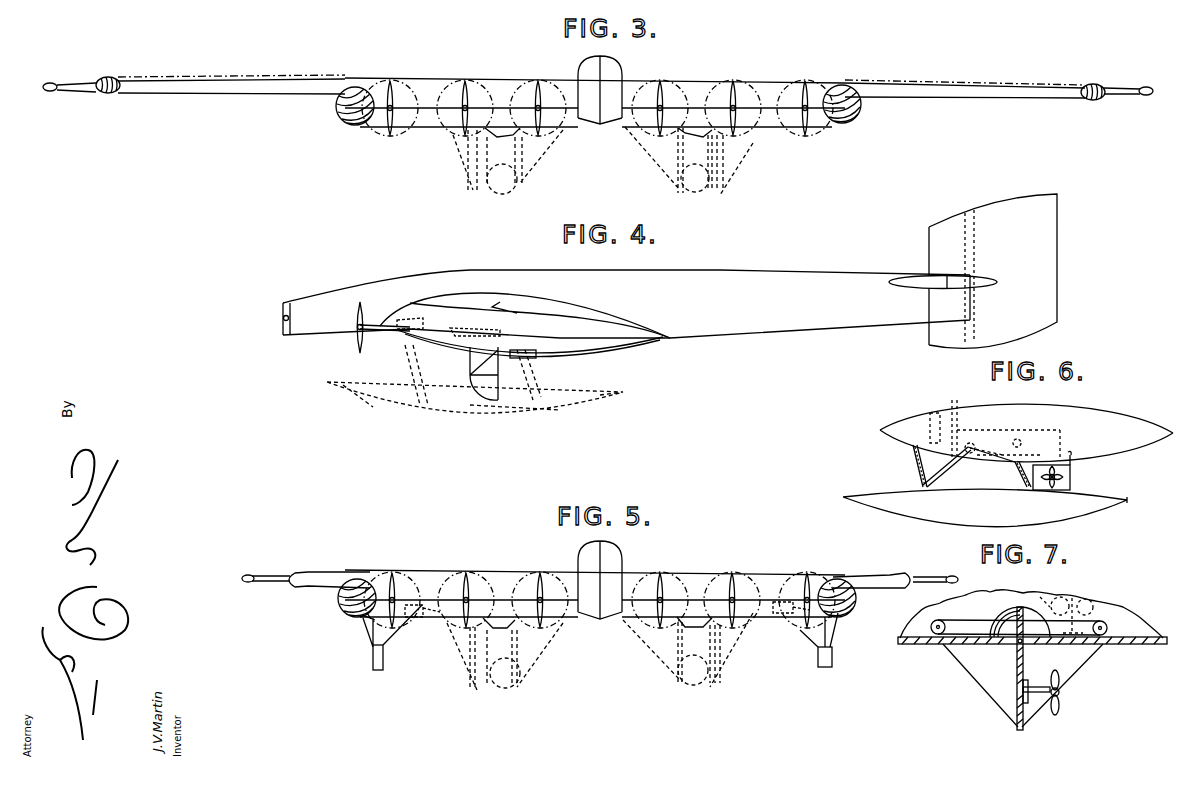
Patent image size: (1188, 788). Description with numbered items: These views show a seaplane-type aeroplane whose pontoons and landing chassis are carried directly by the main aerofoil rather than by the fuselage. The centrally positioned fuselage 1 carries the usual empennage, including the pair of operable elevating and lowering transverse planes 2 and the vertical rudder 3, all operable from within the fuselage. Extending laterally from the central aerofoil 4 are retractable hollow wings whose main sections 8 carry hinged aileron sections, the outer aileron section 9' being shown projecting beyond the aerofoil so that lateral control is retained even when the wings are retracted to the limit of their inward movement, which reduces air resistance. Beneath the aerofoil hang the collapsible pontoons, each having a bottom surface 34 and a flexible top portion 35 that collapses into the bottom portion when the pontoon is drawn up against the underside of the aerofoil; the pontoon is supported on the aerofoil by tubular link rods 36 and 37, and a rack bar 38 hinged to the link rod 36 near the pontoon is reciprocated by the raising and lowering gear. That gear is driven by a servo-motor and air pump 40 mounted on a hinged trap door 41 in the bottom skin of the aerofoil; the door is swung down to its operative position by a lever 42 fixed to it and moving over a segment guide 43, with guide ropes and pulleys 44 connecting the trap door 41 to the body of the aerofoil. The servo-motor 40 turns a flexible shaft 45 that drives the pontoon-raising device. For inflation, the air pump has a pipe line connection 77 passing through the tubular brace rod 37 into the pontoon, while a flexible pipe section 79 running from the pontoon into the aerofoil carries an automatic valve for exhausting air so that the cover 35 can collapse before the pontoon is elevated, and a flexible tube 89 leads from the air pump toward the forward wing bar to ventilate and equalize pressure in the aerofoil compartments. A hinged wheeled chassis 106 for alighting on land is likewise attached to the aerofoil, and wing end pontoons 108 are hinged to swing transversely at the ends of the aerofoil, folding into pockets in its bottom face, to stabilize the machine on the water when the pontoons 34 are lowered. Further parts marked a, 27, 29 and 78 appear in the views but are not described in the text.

In FIG. 3, the fuselage 1 is at (587, 68).
In FIG. 4, the fuselage 1 is at (626, 304).
In FIG. 5, the fuselage 1 is at (613, 563).
In FIG. 4, the transverse planes 2 is at (933, 332).
In FIG. 4, the vertical rudder 3 is at (993, 271).
In FIG. 4, the wing section 4 is at (525, 325).
In FIG. 5, the wing section 4 is at (415, 571).
In FIG. 3, the main wing section 8 is at (237, 77).
In FIG. 4, the main wing section 8 is at (470, 301).
In FIG. 5, the main wing section 8 is at (330, 572).
In FIG. 3, the outer aileron section 9' is at (598, 74).
In FIG. 5, the outer aileron section 9' is at (600, 565).
In FIG. 3, the nacelle a is at (341, 118).
In FIG. 5, the nacelle a is at (343, 603).
In FIG. 4, the nose strut 27 is at (367, 325).
In FIG. 3, the propeller 29 is at (393, 134).
In FIG. 4, the propeller 29 is at (357, 322).
In FIG. 5, the propeller 29 is at (526, 576).
In FIG. 3, the pontoon bottom surface 34 is at (700, 140).
In FIG. 4, the pontoon bottom surface 34 is at (618, 350).
In FIG. 5, the pontoon bottom surface 34 is at (655, 650).
In FIG. 6, the pontoon bottom surface 34 is at (890, 519).
In FIG. 4, the flexible top portion 35 is at (335, 363).
In FIG. 6, the flexible top portion 35 is at (913, 487).
In FIG. 4, the tubular link rod 36 is at (415, 385).
In FIG. 6, the tubular link rod 36 is at (913, 456).
In FIG. 4, the tubular link rod 37 is at (515, 378).
In FIG. 6, the tubular link rod 37 is at (1021, 483).
In FIG. 6, the rack bar 38 is at (940, 463).
In FIG. 6, the servo-motor and air pump 40 is at (1054, 485).
In FIG. 7, the servo-motor and air pump 40 is at (1052, 703).
In FIG. 6, the hinged trap door 41 is at (1040, 490).
In FIG. 7, the hinged trap door 41 is at (1016, 668).
In FIG. 7, the lever 42 is at (1017, 610).
In FIG. 7, the segment guide 43 is at (1000, 617).
In FIG. 7, the guide ropes and pulleys 44 is at (1107, 629).
In FIG. 6, the flexible shaft 45 is at (996, 455).
In FIG. 6, the pipe line connection 77 is at (1043, 457).
In FIG. 6, the air conduit 78 is at (937, 413).
In FIG. 6, the flexible pipe section 79 is at (1017, 447).
In FIG. 6, the flexible tube 89 is at (970, 410).
In FIG. 3, the wheeled chassis 106 is at (473, 190).
In FIG. 5, the wheeled chassis 106 is at (720, 687).
In FIG. 4, the wing end pontoons 108 is at (498, 415).
In FIG. 5, the wing end pontoons 108 is at (370, 663).